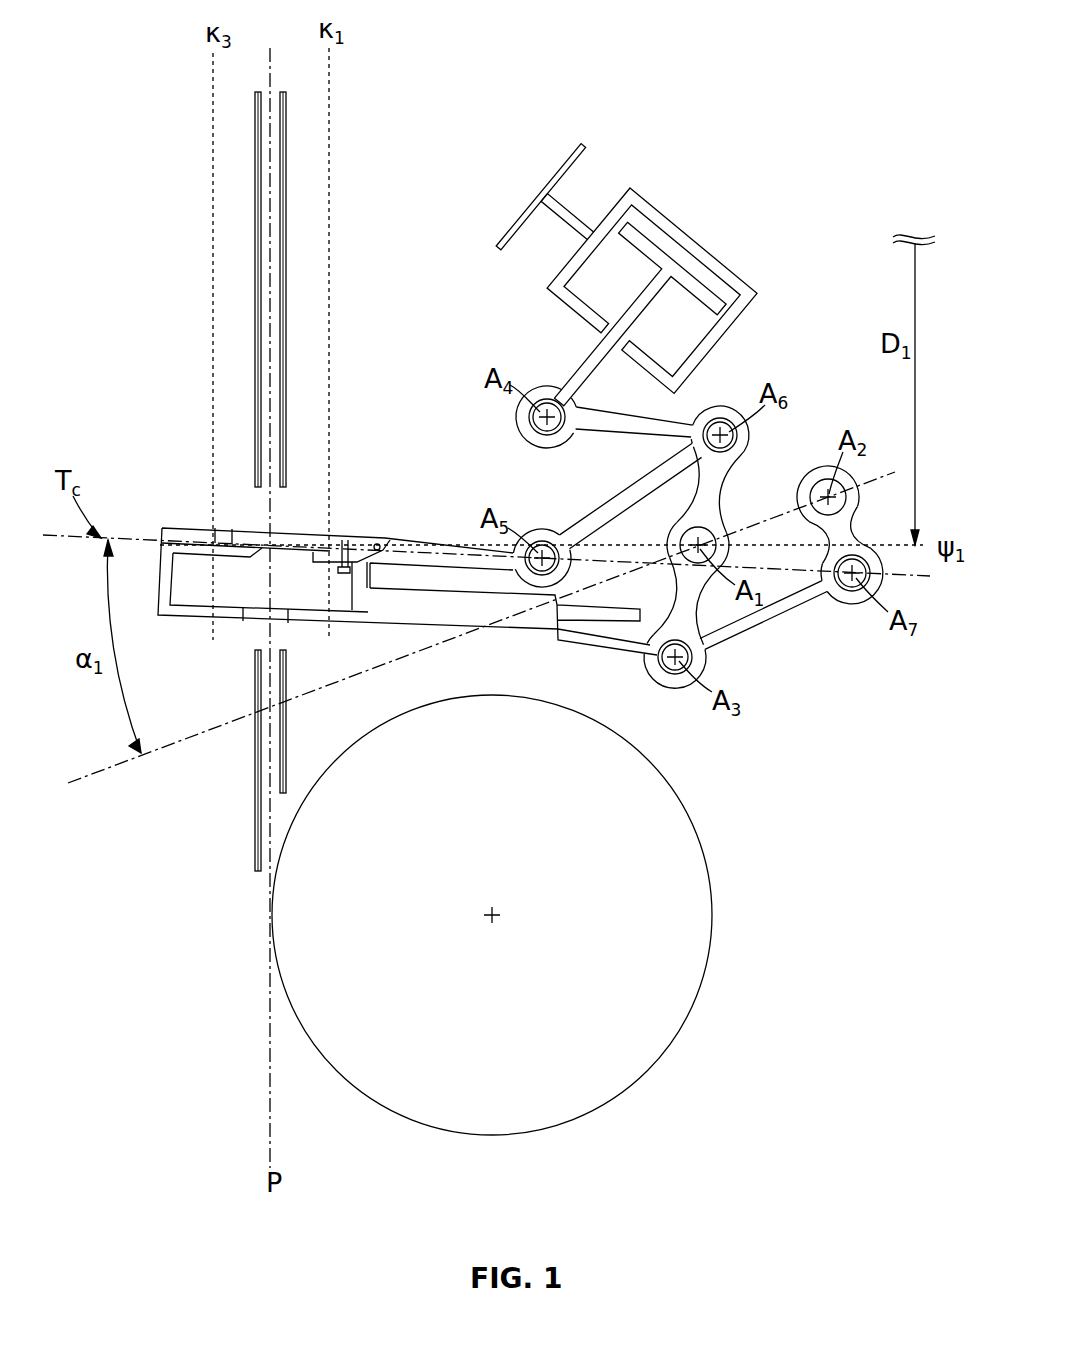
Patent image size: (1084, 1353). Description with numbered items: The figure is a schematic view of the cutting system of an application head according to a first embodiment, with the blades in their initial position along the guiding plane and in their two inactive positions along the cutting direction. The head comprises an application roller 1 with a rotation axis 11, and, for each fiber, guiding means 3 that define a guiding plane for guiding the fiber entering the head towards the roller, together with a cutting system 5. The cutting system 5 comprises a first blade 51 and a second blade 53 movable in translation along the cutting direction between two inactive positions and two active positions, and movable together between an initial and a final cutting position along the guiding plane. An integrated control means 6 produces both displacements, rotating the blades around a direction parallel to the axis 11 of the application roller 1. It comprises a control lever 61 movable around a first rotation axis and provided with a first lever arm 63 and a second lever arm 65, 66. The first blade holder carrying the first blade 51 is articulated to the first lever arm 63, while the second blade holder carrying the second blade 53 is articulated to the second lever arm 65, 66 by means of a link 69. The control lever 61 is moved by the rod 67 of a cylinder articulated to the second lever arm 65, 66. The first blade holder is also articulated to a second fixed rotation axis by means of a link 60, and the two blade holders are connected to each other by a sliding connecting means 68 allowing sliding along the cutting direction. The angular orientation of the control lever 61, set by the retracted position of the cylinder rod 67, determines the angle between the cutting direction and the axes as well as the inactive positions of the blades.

The application roller 1 is at (670, 801).
The axis of the application roller 11 is at (496, 918).
The guiding means 3 is at (256, 307).
The cutting system 5 is at (178, 528).
The first blade 51 is at (243, 556).
The second blade 53 is at (318, 530).
The integrated control means 6 is at (735, 279).
The cylinder rod 67 is at (595, 357).
The second lever arm 66 is at (618, 430).
The link 69 is at (603, 504).
The second lever arm 65 is at (722, 488).
The control lever 61 is at (675, 540).
The link 60 is at (846, 537).
The first lever arm 63 is at (690, 606).
The sliding connecting means 68 is at (528, 624).